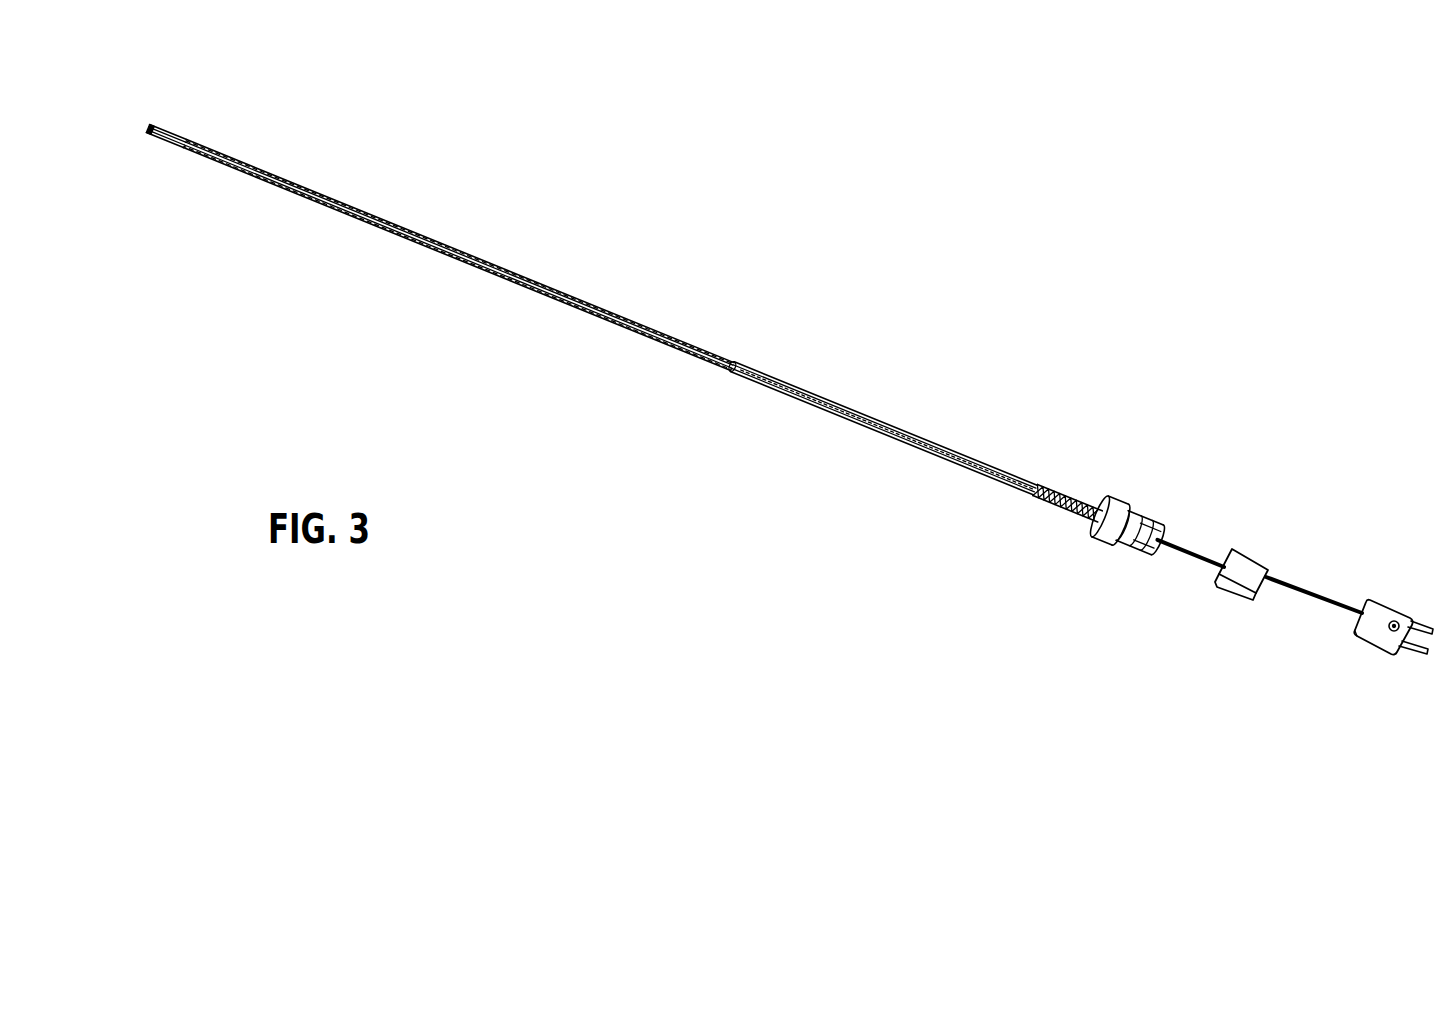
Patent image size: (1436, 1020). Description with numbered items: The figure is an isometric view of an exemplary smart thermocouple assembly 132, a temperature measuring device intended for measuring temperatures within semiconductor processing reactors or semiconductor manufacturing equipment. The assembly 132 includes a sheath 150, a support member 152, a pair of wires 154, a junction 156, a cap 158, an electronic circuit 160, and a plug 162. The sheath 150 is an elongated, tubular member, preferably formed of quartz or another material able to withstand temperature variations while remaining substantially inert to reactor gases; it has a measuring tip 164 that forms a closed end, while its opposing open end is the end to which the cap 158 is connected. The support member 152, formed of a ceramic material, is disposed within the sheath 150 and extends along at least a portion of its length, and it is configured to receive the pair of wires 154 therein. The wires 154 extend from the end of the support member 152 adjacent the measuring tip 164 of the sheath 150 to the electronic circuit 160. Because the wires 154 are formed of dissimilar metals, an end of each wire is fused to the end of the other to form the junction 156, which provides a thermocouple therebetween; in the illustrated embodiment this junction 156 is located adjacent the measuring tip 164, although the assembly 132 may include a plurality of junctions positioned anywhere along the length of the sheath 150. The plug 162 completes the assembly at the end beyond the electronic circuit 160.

The smart thermocouple assembly 132 is at (695, 191).
The sheath 150 is at (364, 211).
The support member 152 is at (393, 237).
The pair of wires 154 is at (1192, 544).
The junction 156 is at (160, 123).
The cap 158 is at (1113, 537).
The electronic circuit 160 is at (1240, 577).
The plug 162 is at (1375, 627).
The measuring tip 164 is at (149, 123).